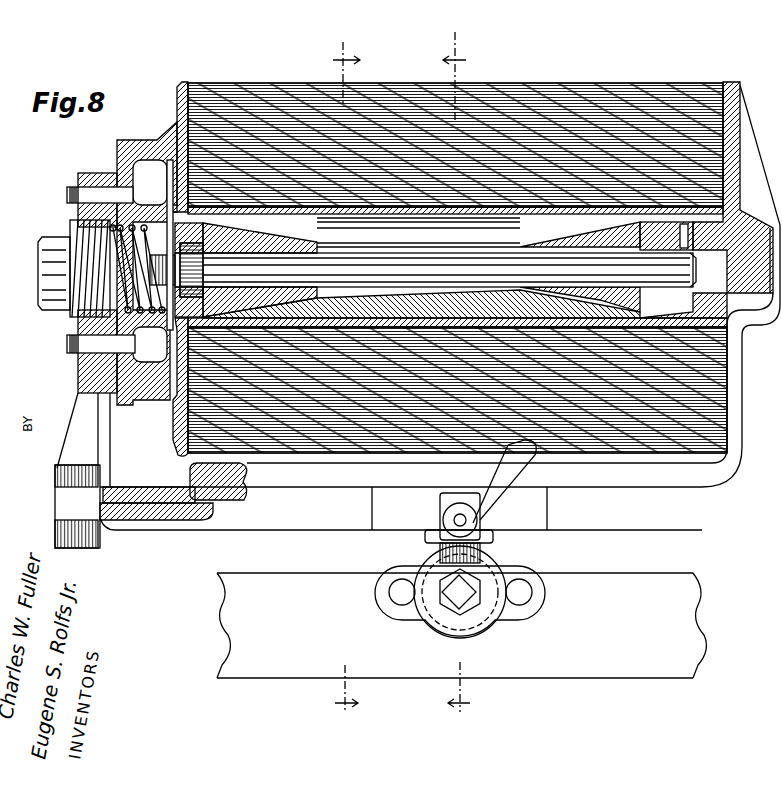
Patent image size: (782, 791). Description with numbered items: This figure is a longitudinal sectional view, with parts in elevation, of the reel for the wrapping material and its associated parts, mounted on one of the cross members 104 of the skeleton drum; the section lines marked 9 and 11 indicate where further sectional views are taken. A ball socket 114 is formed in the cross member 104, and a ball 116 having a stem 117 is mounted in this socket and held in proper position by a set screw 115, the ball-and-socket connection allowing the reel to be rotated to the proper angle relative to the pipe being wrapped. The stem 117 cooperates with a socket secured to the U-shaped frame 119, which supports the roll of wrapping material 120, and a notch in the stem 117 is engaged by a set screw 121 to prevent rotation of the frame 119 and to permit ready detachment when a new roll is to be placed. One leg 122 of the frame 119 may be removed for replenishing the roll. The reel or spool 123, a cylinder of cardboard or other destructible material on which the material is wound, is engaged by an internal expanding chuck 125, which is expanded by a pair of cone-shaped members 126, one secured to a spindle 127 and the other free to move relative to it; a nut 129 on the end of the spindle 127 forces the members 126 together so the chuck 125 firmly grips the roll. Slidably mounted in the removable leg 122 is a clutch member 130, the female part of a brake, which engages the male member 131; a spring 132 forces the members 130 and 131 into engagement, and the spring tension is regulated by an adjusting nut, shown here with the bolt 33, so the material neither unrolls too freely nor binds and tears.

The section line 9- 9 is at (456, 375).
The section line 11- 11 is at (346, 377).
The adjusting bolt 33 is at (48, 246).
The cross member 104 is at (262, 672).
The ball socket 114 is at (440, 628).
The set screw 115 is at (468, 600).
The ball 116 is at (473, 620).
The stem 117 is at (485, 555).
The frame 119 is at (713, 523).
The roll of wrapping material 120 is at (592, 88).
The set screw 121 is at (445, 513).
The removable leg 122 is at (74, 388).
The reel or spool 123 is at (640, 207).
The internal expanding chuck 125 is at (590, 308).
The cone-shaped members 126 is at (255, 243).
The spindle 127 is at (512, 267).
The nut 129 is at (167, 405).
The clutch member 130 is at (117, 167).
The male member 131 is at (153, 147).
The spring 132 is at (105, 285).